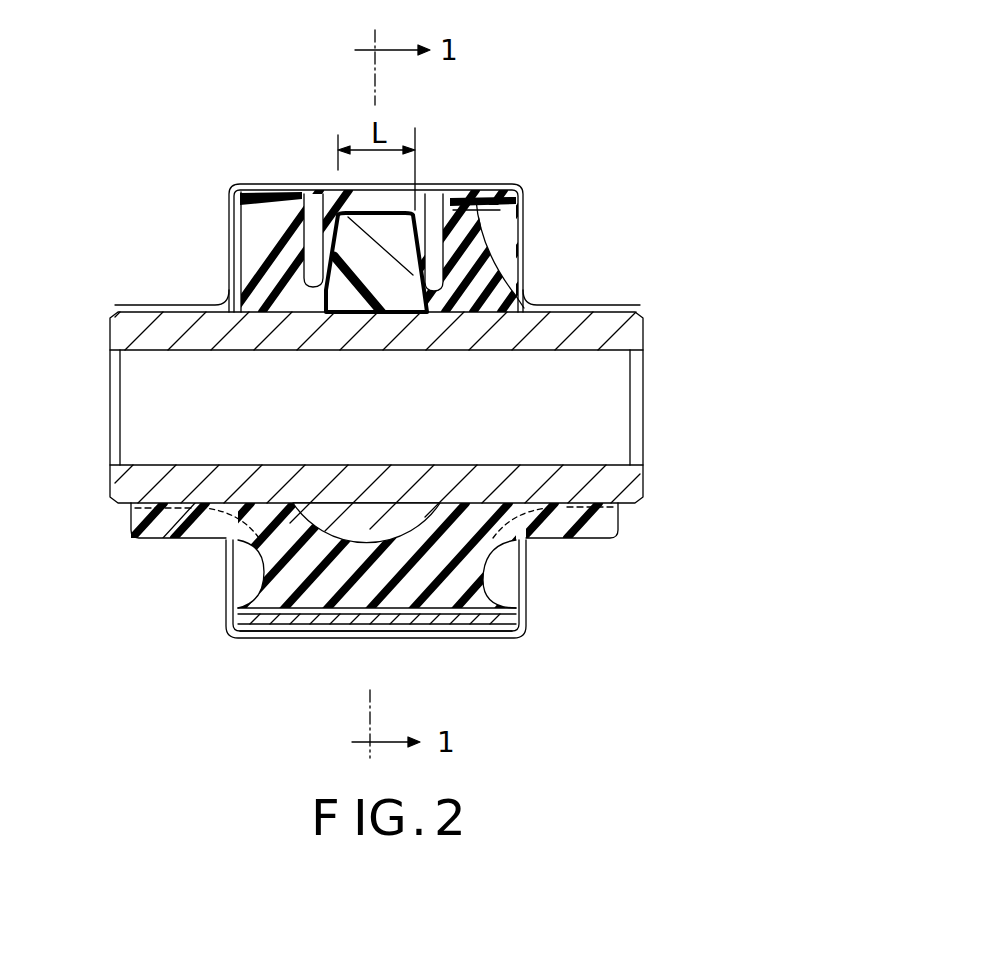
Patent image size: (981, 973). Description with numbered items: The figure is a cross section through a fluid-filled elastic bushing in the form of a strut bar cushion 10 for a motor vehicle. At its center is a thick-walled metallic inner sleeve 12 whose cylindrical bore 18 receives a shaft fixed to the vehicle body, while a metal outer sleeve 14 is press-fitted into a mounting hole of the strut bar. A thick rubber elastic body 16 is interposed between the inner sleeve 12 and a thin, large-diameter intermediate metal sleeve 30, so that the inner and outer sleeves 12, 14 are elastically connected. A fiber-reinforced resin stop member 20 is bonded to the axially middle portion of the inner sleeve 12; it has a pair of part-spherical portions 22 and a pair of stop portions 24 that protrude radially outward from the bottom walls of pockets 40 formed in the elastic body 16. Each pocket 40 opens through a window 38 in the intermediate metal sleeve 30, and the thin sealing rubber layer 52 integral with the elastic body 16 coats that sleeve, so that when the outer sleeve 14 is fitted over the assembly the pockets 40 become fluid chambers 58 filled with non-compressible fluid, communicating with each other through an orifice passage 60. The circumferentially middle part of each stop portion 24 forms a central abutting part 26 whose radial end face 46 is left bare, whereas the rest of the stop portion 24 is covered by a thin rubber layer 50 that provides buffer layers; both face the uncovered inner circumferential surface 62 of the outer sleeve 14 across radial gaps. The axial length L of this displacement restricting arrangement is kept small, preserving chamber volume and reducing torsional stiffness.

The strut bar cushion 10 is at (546, 121).
The inner sleeve 12 is at (561, 311).
The outer sleeve 14 is at (282, 640).
The elastic body 16 is at (280, 588).
The cylindrical bore 18 is at (168, 465).
The stop member 20 is at (414, 544).
The part-spherical portion 22 is at (351, 545).
The stop portion 24 is at (428, 269).
The central abutting part 26 is at (392, 215).
The intermediate metal sleeve 30 is at (468, 620).
The window 38 is at (455, 195).
The pocket 40 is at (241, 226).
The radial end face 46 is at (352, 190).
The rubber layer 50 is at (335, 262).
The sealing rubber layer 52 is at (418, 624).
The fluid chamber 58 is at (440, 235).
The orifice passage 60 is at (372, 620).
The inner circumferential surface 62 is at (322, 200).